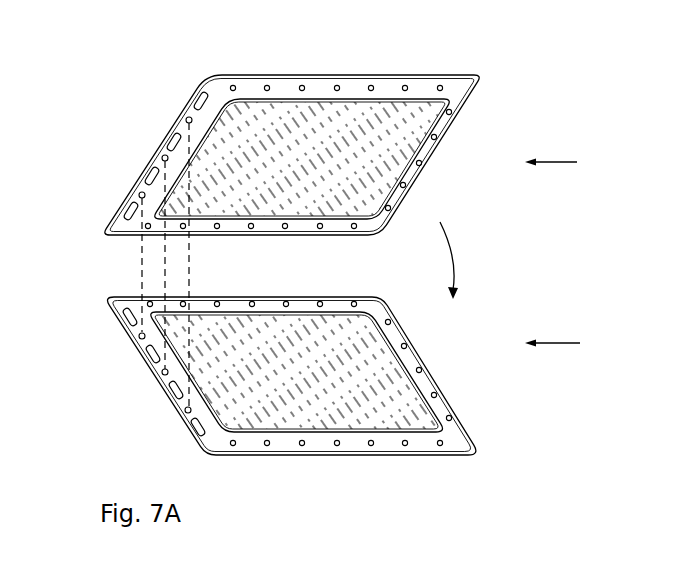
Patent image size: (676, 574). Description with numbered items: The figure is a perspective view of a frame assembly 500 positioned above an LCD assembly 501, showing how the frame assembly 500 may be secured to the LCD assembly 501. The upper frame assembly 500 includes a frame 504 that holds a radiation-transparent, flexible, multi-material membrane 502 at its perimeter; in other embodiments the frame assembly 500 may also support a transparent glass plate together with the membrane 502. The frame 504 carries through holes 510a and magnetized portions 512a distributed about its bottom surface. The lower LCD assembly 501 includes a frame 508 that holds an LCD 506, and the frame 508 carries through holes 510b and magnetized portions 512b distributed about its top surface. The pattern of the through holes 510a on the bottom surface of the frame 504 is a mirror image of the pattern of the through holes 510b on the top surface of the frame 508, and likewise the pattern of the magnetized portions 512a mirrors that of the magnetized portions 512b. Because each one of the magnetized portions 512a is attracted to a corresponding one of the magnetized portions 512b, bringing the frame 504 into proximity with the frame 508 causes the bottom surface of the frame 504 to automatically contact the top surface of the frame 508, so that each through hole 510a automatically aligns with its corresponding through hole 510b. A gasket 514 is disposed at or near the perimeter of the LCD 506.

The frame assembly 500 is at (569, 163).
The LCD assembly 501 is at (569, 344).
The radiation-transparent, flexible, multi-material membrane 502 is at (392, 145).
The frame 504 is at (468, 95).
The LCD 506 is at (354, 361).
The frame 508 is at (468, 438).
The through holes 510a is at (405, 76).
The through holes 510b is at (405, 455).
The magnetized portions 512a is at (163, 140).
The magnetized portions 512b is at (132, 320).
The gasket 514 is at (280, 427).